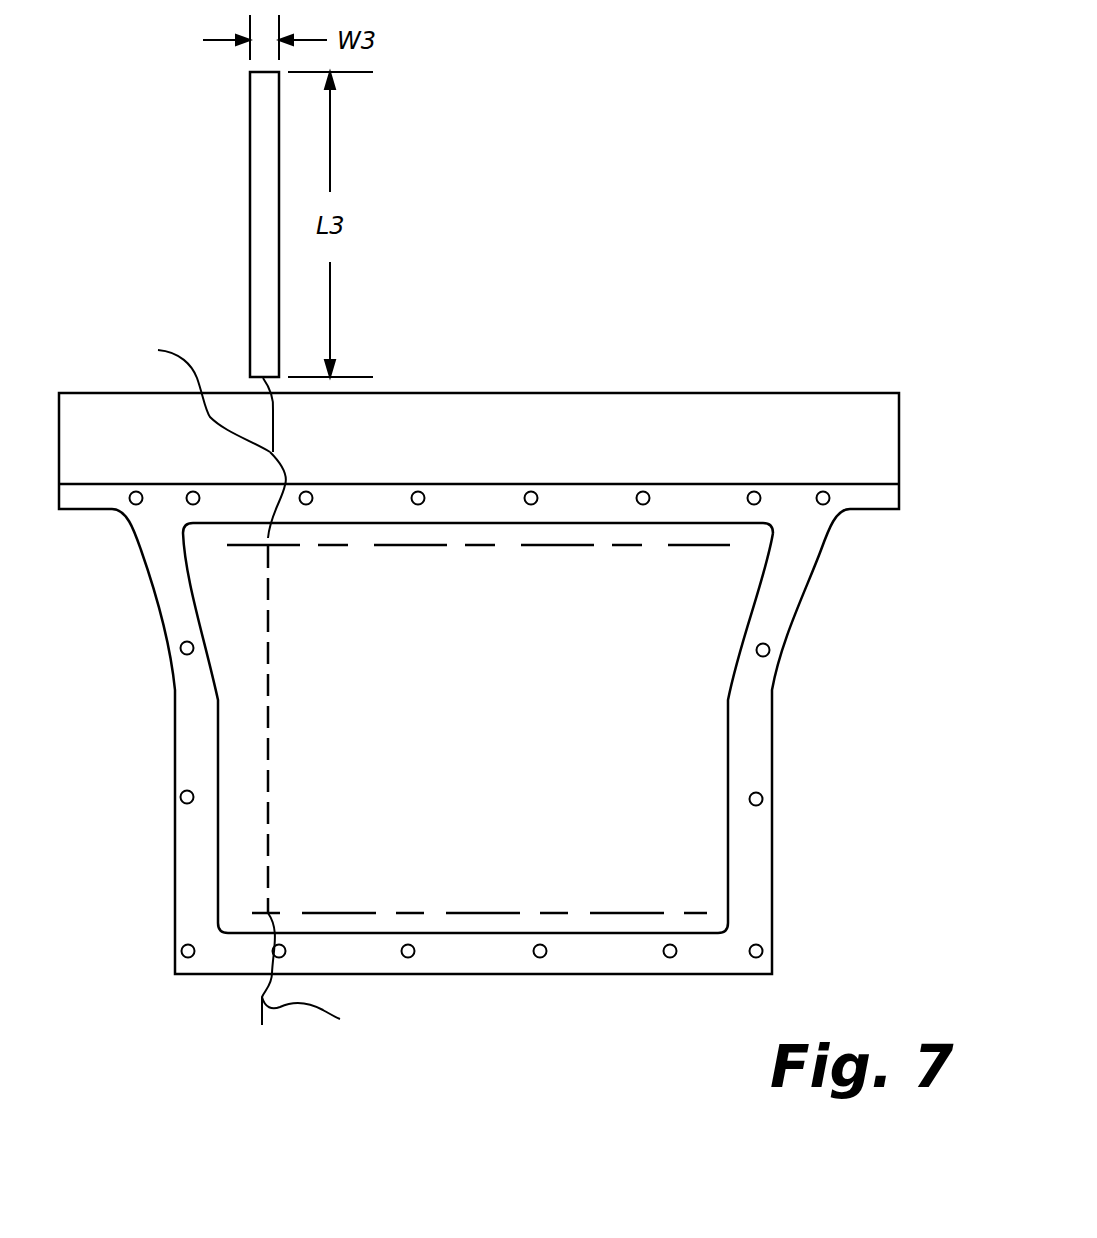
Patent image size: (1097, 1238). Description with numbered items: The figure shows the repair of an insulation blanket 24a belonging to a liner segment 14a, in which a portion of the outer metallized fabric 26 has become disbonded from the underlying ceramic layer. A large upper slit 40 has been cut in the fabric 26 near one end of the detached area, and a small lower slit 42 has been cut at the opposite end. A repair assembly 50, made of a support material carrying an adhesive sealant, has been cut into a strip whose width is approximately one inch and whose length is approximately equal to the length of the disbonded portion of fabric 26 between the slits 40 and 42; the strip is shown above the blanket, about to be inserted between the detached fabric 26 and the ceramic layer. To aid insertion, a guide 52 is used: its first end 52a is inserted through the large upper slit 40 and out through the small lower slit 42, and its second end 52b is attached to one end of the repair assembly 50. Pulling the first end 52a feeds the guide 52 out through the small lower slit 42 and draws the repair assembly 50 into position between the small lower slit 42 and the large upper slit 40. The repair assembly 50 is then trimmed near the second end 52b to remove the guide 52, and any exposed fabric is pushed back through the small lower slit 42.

The liner segment 14a is at (752, 358).
The insulation blanket 24a is at (697, 705).
The metallized fabric 26 is at (650, 665).
The large upper slit 40 is at (243, 548).
The small lower slit 42 is at (253, 913).
The repair assembly 50 is at (263, 178).
The guide 52 is at (270, 653).
The first end 52a is at (328, 975).
The second end 52b is at (195, 435).